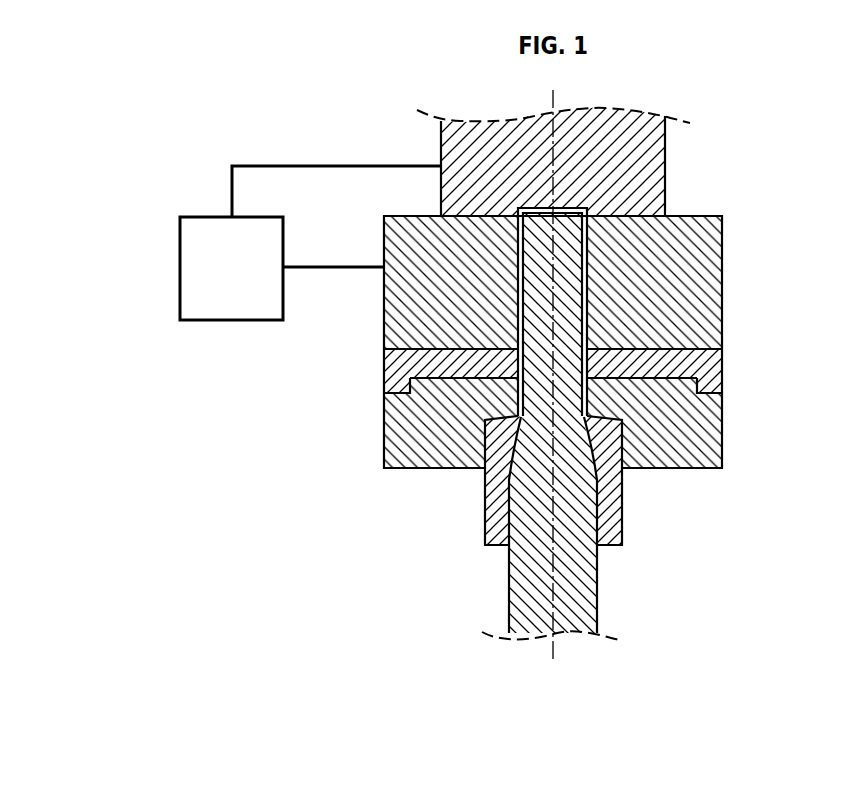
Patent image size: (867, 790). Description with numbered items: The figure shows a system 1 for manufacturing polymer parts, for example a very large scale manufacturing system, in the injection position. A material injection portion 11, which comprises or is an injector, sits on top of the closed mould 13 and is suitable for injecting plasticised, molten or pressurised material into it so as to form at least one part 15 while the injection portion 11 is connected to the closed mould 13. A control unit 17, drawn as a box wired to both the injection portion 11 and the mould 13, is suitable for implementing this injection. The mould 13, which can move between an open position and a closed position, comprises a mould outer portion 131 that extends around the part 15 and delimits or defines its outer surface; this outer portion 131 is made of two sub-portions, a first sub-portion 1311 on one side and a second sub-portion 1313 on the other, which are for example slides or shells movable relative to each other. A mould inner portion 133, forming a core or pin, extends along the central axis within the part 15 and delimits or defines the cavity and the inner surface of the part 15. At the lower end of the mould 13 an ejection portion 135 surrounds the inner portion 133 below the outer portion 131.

The system 1 is at (514, 375).
The material injection portion 11 is at (667, 167).
The mould 13 is at (579, 408).
The mould outer portion 131 is at (723, 273).
The first sub-portion 1311 is at (401, 302).
The second sub-portion 1313 is at (707, 302).
The mould inner portion 133 is at (599, 577).
The ejection portion 135 is at (623, 485).
The part 15 is at (590, 297).
The control unit 17 is at (222, 279).